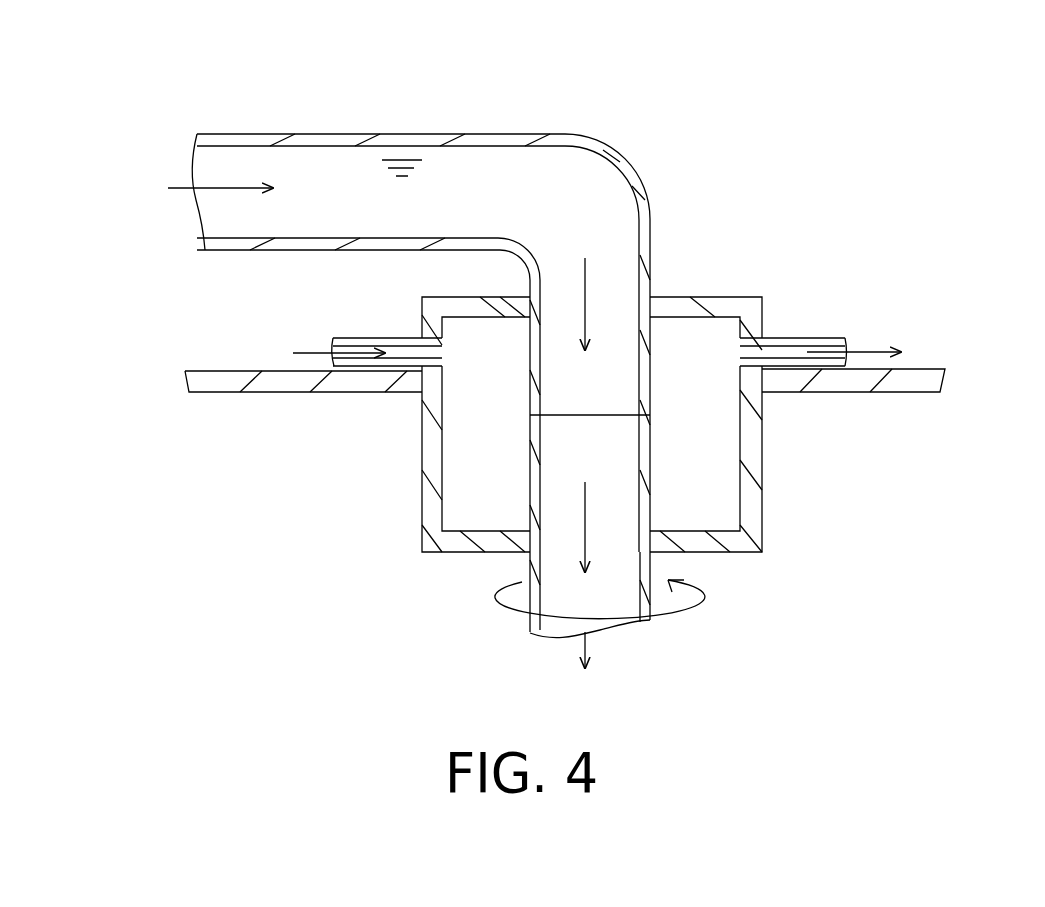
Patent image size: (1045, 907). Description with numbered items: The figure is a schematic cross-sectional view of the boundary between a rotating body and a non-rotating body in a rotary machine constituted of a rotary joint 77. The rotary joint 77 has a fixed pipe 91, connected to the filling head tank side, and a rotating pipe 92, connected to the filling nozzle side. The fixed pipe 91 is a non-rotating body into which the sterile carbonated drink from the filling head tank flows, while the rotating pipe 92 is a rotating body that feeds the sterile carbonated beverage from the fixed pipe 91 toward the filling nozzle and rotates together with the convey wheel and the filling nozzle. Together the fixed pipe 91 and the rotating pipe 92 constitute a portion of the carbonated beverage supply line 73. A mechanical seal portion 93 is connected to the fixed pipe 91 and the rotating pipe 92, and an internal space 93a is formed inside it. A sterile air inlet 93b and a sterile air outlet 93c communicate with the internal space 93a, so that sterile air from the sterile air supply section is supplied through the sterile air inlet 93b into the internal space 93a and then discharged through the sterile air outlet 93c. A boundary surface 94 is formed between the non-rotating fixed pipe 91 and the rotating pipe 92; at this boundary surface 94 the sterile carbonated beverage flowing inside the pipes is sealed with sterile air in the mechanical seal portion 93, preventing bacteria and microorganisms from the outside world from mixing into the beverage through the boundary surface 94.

The carbonated beverage supply line 73 is at (253, 106).
The rotary joint 77 is at (775, 140).
The fixed pipe 91 is at (477, 134).
The rotating pipe 92 is at (645, 568).
The mechanical seal portion 93 is at (688, 297).
The internal space 93a is at (456, 493).
The sterile air inlet 93b is at (375, 338).
The sterile air outlet 93c is at (797, 338).
The boundary surface 94 is at (625, 414).